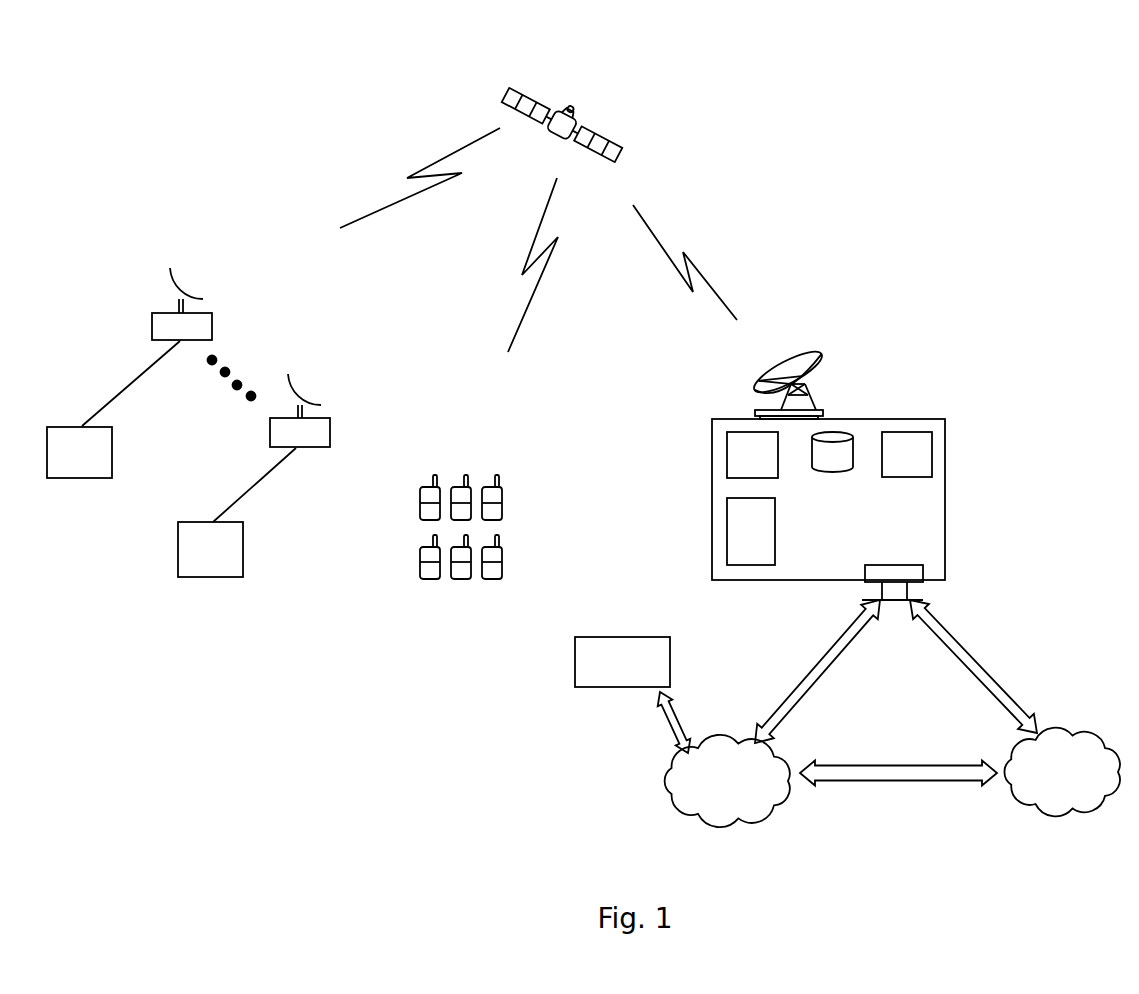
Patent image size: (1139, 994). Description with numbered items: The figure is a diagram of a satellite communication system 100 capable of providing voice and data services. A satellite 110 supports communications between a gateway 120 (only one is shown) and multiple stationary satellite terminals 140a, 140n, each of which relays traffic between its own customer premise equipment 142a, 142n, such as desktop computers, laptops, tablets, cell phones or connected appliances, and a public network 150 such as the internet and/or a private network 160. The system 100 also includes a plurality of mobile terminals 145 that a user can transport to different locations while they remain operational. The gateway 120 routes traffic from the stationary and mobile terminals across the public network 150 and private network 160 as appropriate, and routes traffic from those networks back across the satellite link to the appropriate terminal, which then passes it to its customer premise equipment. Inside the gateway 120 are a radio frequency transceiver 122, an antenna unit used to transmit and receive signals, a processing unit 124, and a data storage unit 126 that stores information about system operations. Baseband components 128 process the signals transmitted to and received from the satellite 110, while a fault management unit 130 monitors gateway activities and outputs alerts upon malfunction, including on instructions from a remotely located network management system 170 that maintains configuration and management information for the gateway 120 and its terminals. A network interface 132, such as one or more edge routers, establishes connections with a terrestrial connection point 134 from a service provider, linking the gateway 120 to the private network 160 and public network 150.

The satellite communication system 100 is at (968, 68).
The satellite 110 is at (604, 136).
The gateway 120 is at (857, 430).
The radio frequency transceiver 122 is at (823, 358).
The processing unit 124 is at (727, 453).
The data storage unit 126 is at (833, 472).
The baseband components 128 is at (727, 531).
The fault management unit 130 is at (932, 447).
The network interface 132 is at (893, 565).
The terrestrial connection point 134 is at (895, 600).
The stationary satellite terminal 140a is at (152, 321).
The stationary satellite terminal 140n is at (270, 428).
The customer premise equipment 142a is at (80, 479).
The customer premise equipment 142n is at (210, 578).
The mobile terminals 145 is at (392, 594).
The public network 150 is at (1061, 785).
The private network 160 is at (727, 791).
The network management system 170 is at (575, 662).